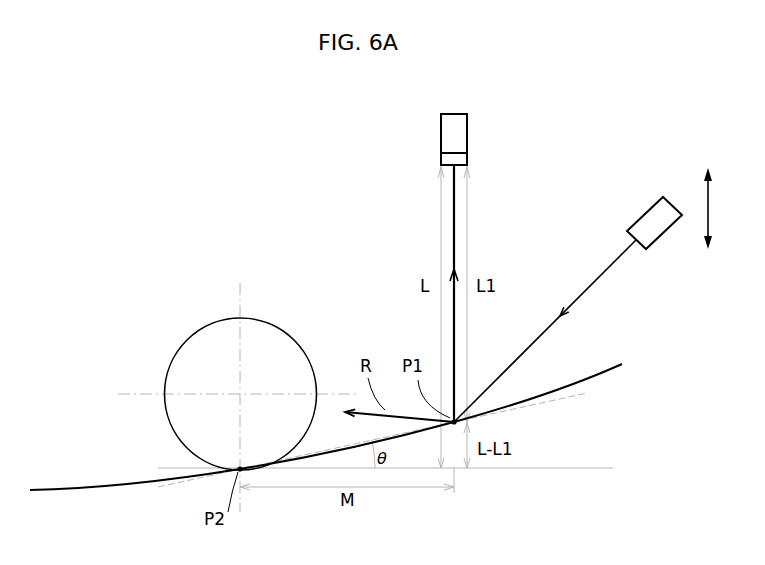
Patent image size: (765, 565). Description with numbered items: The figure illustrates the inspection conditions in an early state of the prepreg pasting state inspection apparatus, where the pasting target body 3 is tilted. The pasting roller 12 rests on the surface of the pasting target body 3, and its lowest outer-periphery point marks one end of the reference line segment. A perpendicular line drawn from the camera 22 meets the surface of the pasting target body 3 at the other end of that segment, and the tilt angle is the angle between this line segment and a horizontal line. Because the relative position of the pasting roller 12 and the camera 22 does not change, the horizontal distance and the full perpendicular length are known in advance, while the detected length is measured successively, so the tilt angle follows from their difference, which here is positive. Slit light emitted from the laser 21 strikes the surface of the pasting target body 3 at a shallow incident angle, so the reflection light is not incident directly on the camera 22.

The pasting target body 3 is at (53, 492).
The pasting roller 12 is at (276, 350).
The laser 21 is at (648, 218).
The camera 22 is at (455, 134).